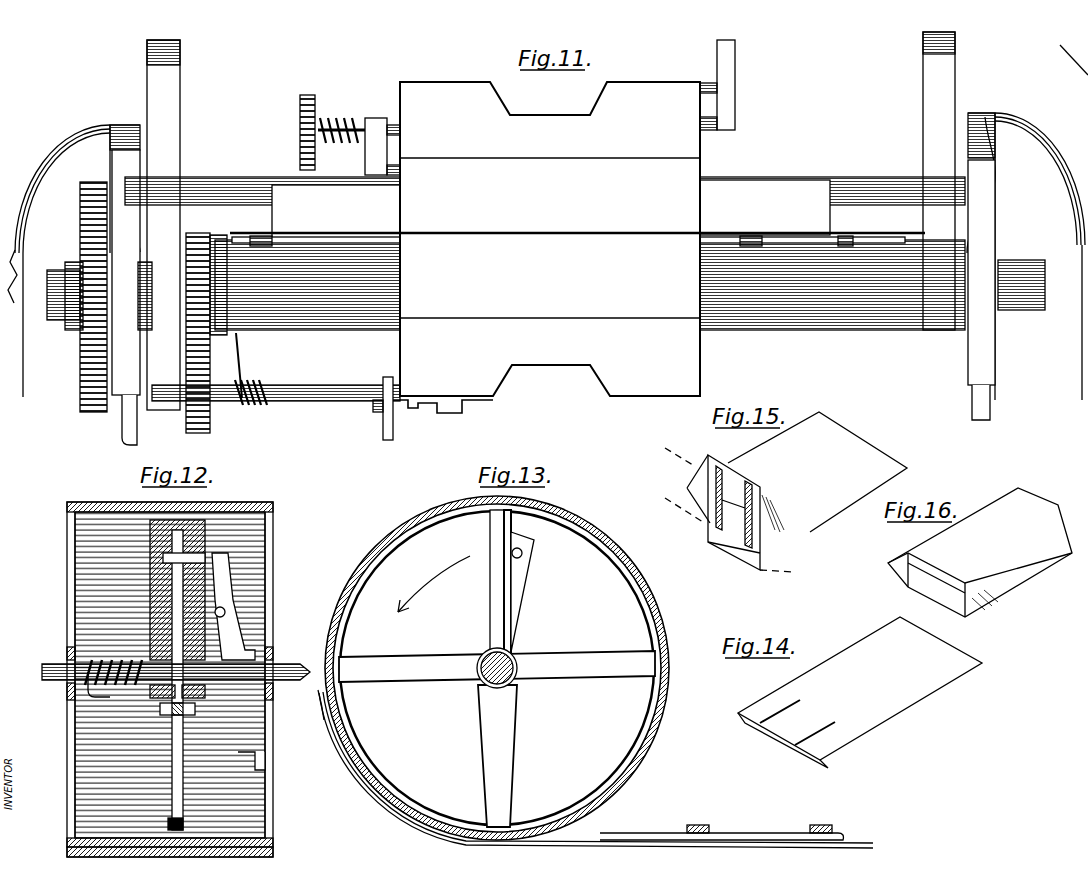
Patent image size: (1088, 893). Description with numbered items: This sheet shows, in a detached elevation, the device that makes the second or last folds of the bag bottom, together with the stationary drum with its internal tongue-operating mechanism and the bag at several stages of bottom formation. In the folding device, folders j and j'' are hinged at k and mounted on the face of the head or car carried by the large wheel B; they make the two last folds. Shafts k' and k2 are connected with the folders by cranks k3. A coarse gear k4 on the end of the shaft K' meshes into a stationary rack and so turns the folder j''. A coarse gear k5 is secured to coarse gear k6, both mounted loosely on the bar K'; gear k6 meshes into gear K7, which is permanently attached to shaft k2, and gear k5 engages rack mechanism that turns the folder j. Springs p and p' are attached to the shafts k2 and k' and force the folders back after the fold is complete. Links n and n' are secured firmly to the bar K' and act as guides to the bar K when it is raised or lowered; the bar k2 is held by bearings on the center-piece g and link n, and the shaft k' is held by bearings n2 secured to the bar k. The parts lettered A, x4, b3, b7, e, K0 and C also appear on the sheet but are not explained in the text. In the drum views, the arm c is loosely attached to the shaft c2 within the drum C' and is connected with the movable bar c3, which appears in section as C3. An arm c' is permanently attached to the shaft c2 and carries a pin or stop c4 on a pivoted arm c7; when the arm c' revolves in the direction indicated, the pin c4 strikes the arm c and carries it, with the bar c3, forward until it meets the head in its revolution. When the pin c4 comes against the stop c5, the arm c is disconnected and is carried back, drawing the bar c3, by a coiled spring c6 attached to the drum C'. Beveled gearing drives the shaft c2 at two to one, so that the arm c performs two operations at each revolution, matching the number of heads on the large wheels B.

In FIG. 11, the frame A is at (546, 256).
In FIG. 11, the large wheel B is at (573, 416).
In FIG. 11, the link n is at (163, 225).
In FIG. 11, the link n' is at (939, 181).
In FIG. 11, the bearing n2 is at (382, 146).
In FIG. 11, the bar x4 is at (553, 297).
In FIG. 11, the gear b3 is at (65, 322).
In FIG. 11, the rod b7 is at (885, 236).
In FIG. 11, the center-piece g is at (573, 242).
In FIG. 11, the pin e is at (99, 162).
In FIG. 11, the bar K is at (545, 192).
In FIG. 11, the bar K' is at (590, 293).
In FIG. 11, the gear K0 is at (199, 320).
In FIG. 11, the gear K7 is at (220, 421).
In FIG. 11, the hinge k is at (695, 231).
In FIG. 11, the shaft k' is at (341, 119).
In FIG. 11, the shaft k2 is at (276, 405).
In FIG. 11, the crank k3 is at (565, 252).
In FIG. 11, the coarse gear k4 is at (293, 132).
In FIG. 11, the coarse gear k5 is at (220, 250).
In FIG. 11, the coarse gear k6 is at (228, 365).
In FIG. 11, the spring p is at (331, 156).
In FIG. 11, the spring p' is at (253, 384).
In FIG. 11, the folder j is at (441, 356).
In FIG. 11, the folder j'' is at (550, 239).
In FIG. 12, the casing / band C is at (180, 680).
In FIG. 13, the casing / band C is at (596, 769).
In FIG. 12, the drum C' is at (56, 547).
In FIG. 13, the drum C' is at (497, 668).
In FIG. 12, the movable bar C3 is at (177, 757).
In FIG. 13, the arm c is at (497, 668).
In FIG. 13, the arm c' is at (522, 592).
In FIG. 12, the shaft c2 is at (176, 663).
In FIG. 13, the shaft c2 is at (513, 668).
In FIG. 13, the movable bar c3 is at (434, 578).
In FIG. 12, the pin or stop c4 is at (205, 556).
In FIG. 13, the pin or stop c4 is at (523, 553).
In FIG. 12, the stop c5 is at (233, 606).
In FIG. 13, the stop c5 is at (747, 823).
In FIG. 12, the coiled spring c6 is at (118, 660).
In FIG. 12, the pivoted arm c7 is at (251, 757).